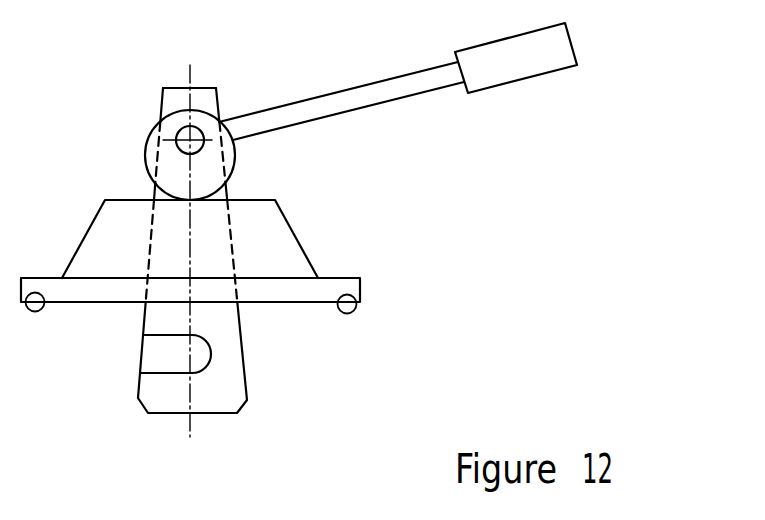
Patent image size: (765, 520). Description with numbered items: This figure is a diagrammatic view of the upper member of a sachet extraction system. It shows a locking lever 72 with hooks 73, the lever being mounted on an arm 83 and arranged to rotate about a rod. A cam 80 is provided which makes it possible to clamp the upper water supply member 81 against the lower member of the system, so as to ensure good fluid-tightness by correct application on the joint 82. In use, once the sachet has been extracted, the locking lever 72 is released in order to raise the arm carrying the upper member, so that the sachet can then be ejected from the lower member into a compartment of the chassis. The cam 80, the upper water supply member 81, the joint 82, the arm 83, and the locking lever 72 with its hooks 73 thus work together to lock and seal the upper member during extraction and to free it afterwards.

The locking lever 72 is at (542, 59).
The hooks 73 is at (163, 377).
The cam 80 is at (148, 140).
The upper water supply member 81 is at (272, 252).
The joint 82 is at (348, 313).
The arm 83 is at (222, 323).